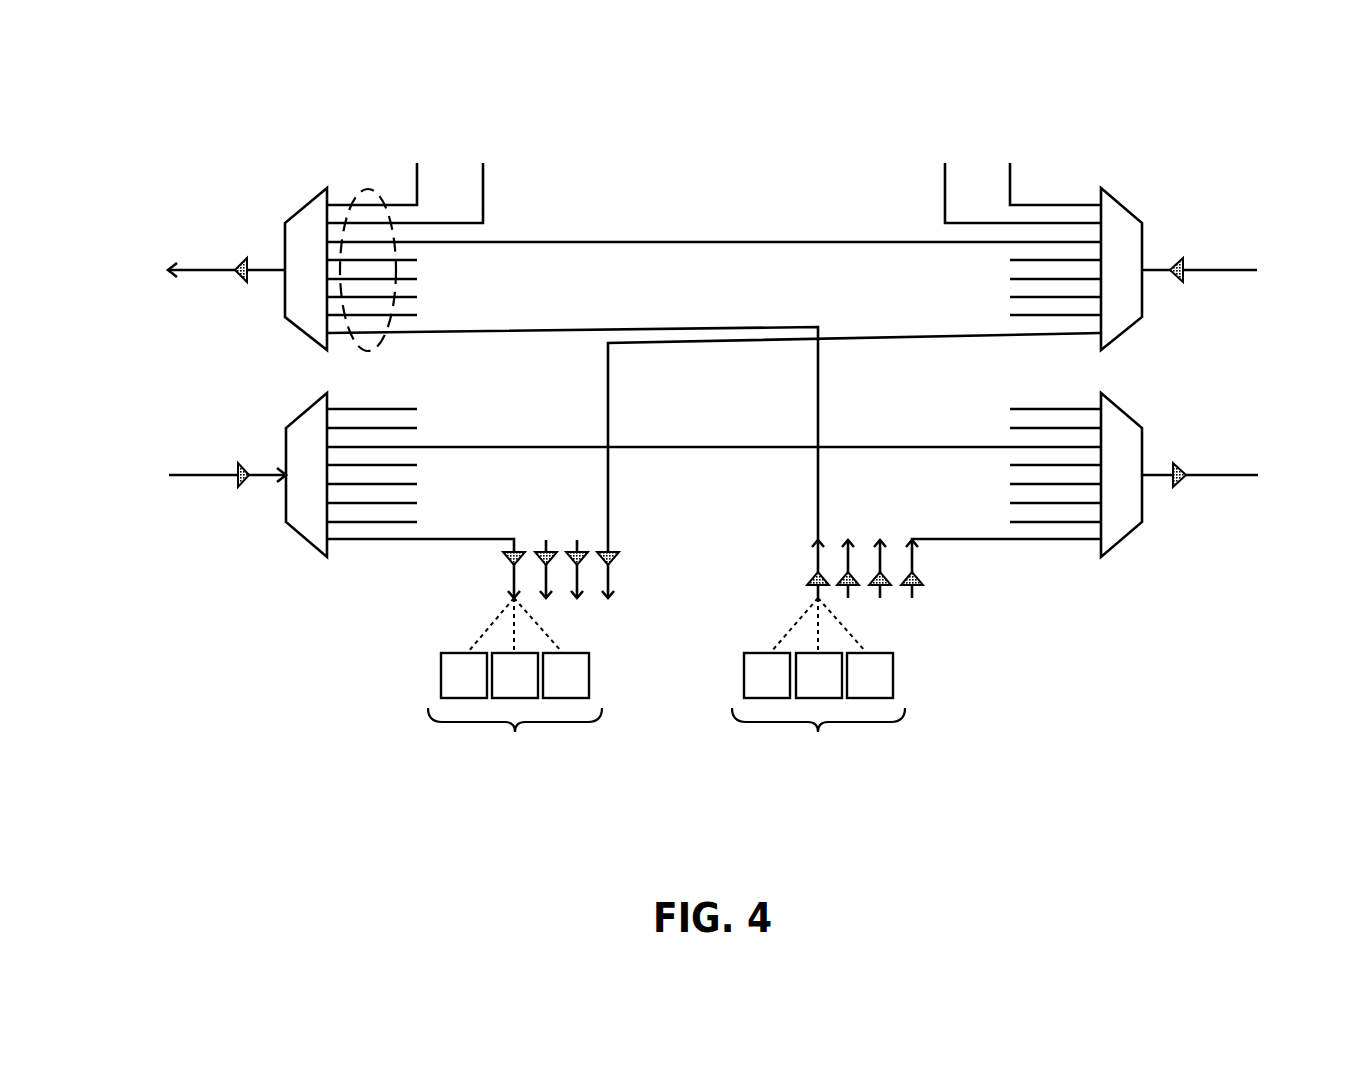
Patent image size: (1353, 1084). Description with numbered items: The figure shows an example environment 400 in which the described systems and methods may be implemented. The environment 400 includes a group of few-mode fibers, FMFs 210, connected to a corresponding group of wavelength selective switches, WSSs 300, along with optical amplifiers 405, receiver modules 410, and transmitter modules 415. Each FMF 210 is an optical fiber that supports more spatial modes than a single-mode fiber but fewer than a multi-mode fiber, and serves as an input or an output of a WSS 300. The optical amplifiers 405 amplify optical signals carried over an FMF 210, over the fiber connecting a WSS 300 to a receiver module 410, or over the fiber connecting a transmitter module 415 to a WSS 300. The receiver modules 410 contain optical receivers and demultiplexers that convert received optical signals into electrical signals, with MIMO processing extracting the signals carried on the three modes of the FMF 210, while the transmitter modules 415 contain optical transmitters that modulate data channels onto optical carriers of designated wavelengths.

The environment 400 is at (230, 75).
The wavelength selective switch 300 is at (1160, 548).
The few-mode fiber 210 is at (200, 275).
The optical amplifier 405 is at (239, 262).
The receiver module 410 is at (515, 692).
The transmitter module 415 is at (818, 692).